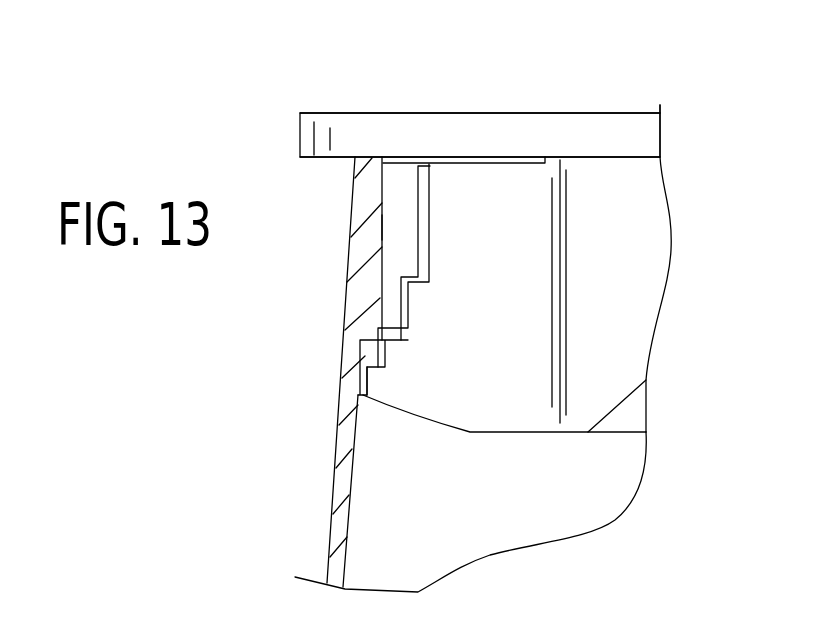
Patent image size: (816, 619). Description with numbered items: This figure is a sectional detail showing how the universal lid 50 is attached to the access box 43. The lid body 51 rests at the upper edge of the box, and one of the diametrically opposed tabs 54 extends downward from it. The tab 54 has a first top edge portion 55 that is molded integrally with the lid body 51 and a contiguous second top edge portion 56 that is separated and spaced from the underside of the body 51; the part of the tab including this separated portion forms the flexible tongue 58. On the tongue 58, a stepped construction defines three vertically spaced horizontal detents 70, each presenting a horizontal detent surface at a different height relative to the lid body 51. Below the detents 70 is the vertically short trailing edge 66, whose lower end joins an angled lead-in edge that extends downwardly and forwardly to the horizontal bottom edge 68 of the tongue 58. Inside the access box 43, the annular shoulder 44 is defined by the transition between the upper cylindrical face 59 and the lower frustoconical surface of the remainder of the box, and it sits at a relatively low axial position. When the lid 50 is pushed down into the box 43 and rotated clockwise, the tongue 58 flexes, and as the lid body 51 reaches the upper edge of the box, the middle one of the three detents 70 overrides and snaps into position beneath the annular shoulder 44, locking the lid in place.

The lid 50 is at (567, 88).
The lid body 51 is at (427, 132).
The first top edge portion 55 is at (638, 153).
The second top edge portion 56 is at (500, 165).
The tab 54 is at (637, 285).
The access box 43 is at (328, 326).
The annular shoulder 44 is at (362, 371).
The horizontal detents 70 is at (423, 278).
The upper cylindrical face 59 is at (386, 229).
The trailing edge 66 is at (367, 377).
The flexible tongue 58 is at (528, 408).
The horizontal bottom edge 68 is at (637, 435).